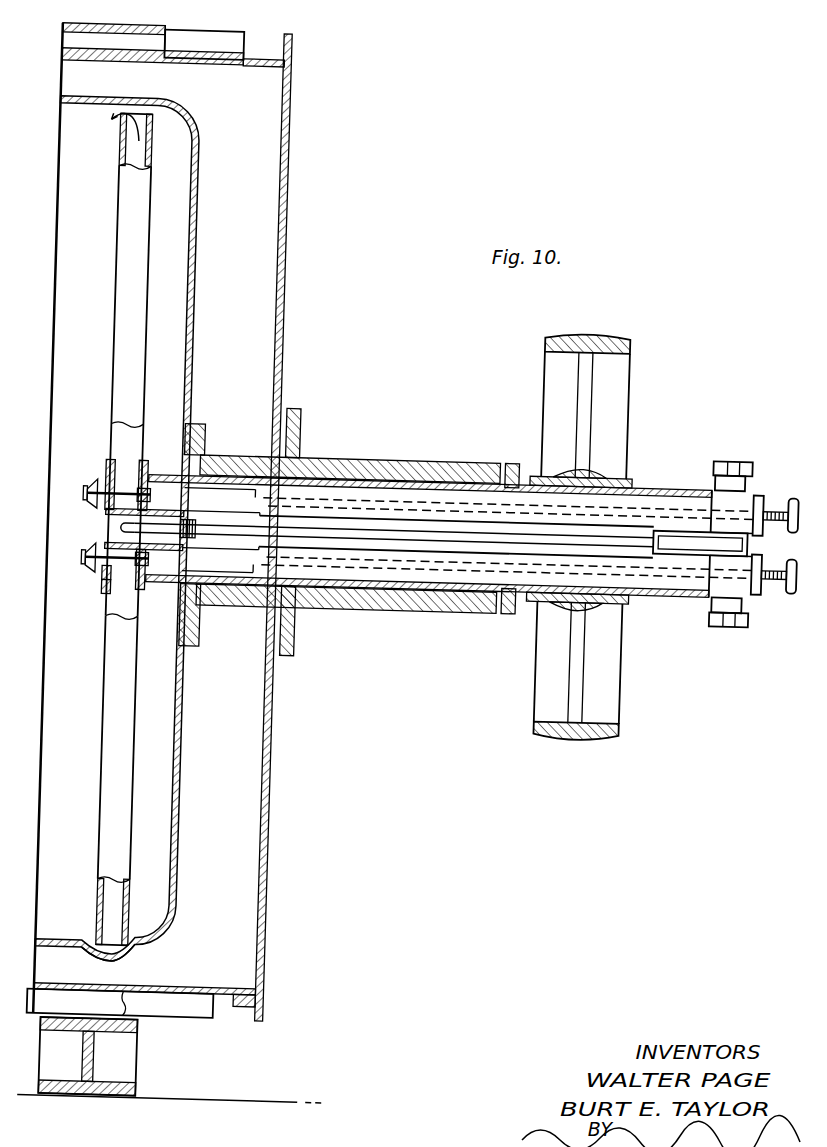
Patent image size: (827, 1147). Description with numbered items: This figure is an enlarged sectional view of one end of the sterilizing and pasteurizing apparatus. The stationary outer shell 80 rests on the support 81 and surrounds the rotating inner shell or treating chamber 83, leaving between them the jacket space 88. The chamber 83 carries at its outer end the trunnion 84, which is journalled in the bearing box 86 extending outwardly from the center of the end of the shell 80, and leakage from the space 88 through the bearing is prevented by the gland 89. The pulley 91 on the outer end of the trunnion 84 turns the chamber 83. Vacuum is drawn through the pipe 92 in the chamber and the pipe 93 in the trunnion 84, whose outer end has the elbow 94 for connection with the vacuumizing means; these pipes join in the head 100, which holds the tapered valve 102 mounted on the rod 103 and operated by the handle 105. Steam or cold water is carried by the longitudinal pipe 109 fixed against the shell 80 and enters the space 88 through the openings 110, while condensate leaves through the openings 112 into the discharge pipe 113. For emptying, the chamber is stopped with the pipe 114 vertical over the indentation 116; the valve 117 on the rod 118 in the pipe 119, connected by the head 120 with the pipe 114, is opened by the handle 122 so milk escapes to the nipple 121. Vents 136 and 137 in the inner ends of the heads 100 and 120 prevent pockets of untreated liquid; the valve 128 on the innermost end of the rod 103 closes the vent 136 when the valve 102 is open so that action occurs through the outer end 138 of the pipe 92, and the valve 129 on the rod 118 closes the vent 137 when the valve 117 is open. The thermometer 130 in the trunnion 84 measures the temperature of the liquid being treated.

The outer shell 80 is at (293, 222).
The support 81 is at (150, 1064).
The inner shell 83 is at (203, 278).
The trunnion 84 is at (262, 599).
The bearing box 86 is at (410, 449).
The jacket space 88 is at (272, 174).
The gland 89 is at (524, 449).
The pulley 91 is at (600, 724).
The vacuum pipe 92 is at (141, 381).
The trunnion vacuum pipe 93 is at (652, 490).
The elbow 94 is at (728, 462).
The elbow head 100 is at (120, 464).
The tapered valve 102 is at (162, 482).
The valve rod 103 is at (242, 483).
The handle 105 is at (808, 476).
The longitudinal pipe 109 is at (212, 42).
The opening 110 is at (112, 58).
The condensate opening 112 is at (110, 981).
The discharge pipe 113 is at (222, 1000).
The milk discharge pipe 114 is at (124, 812).
The indentation 116 is at (150, 954).
The discharge valve 117 is at (157, 584).
The discharge valve rod 118 is at (238, 578).
The outlet pipe 119 is at (386, 578).
The head 120 is at (122, 590).
The nipple 121 is at (735, 592).
The discharge handle 122 is at (806, 572).
The vent valve 128 is at (98, 490).
The discharge vent valve 129 is at (98, 554).
The thermometer 130 is at (763, 524).
The vent 136 is at (121, 508).
The vent 137 is at (119, 566).
The outer end of vacuum pipe 138 is at (121, 136).